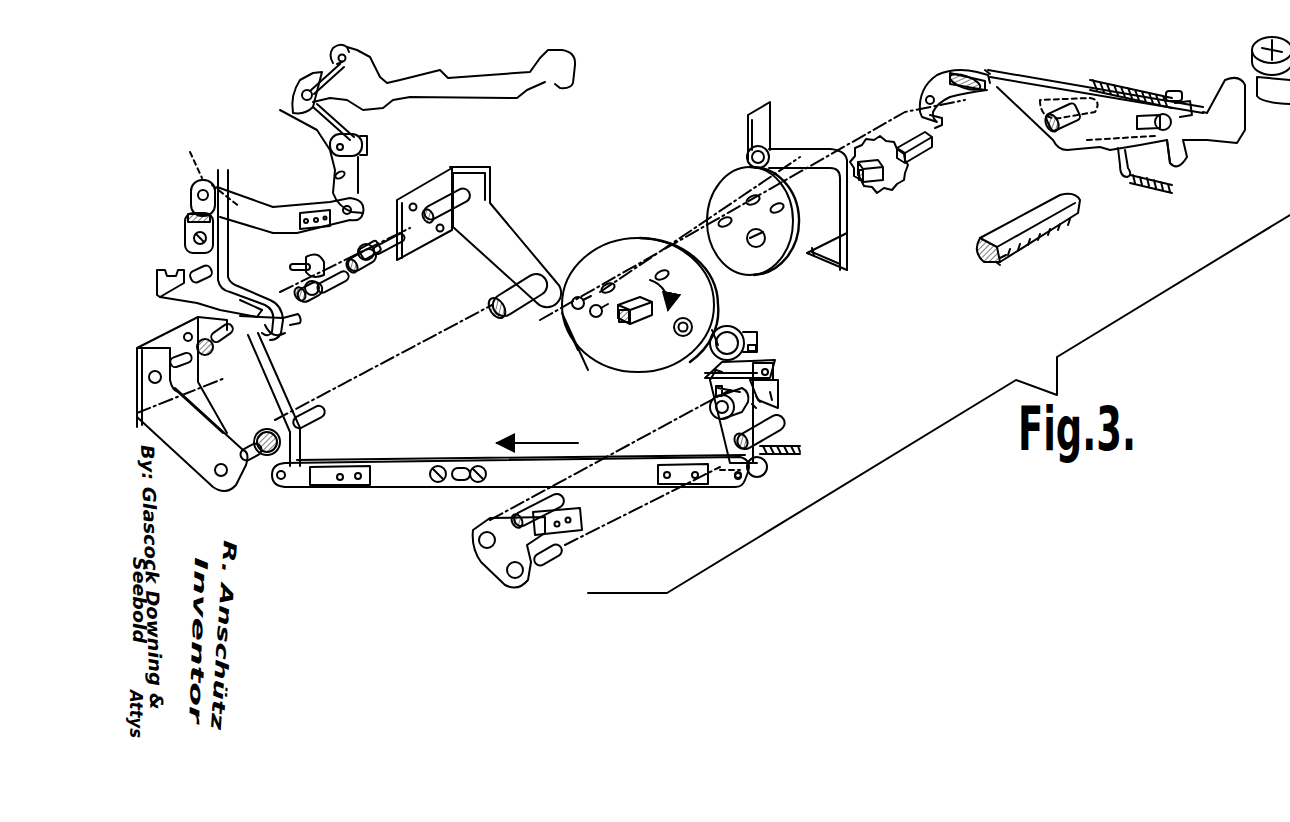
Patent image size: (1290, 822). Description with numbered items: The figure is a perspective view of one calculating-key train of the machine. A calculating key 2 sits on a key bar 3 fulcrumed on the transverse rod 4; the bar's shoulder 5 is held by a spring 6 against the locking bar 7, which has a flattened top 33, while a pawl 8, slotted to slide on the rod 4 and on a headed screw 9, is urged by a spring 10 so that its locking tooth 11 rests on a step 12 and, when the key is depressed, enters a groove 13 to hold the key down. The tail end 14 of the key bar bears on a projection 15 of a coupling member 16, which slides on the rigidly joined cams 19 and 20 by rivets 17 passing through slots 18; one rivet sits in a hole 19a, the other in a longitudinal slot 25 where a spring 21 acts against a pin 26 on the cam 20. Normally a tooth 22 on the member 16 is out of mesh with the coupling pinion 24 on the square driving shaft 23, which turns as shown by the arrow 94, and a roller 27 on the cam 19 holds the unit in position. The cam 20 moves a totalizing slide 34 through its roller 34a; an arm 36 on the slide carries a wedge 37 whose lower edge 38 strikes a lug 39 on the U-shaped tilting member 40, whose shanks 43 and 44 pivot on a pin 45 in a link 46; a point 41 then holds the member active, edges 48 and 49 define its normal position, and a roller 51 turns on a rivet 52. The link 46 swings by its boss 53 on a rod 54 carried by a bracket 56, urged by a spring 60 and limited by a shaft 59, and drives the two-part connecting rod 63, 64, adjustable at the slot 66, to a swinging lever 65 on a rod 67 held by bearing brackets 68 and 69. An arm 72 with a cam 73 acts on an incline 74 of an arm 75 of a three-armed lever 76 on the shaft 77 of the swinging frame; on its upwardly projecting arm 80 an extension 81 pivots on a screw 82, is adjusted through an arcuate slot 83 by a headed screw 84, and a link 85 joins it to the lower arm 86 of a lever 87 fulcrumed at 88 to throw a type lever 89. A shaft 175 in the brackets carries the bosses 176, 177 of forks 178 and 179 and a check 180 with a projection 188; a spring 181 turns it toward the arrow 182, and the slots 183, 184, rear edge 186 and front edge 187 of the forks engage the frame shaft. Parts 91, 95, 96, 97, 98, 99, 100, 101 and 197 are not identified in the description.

The calculating key 2 is at (1270, 40).
The key bar 3 is at (1220, 122).
The transverse rod 4 is at (1068, 112).
The shoulder 5 is at (1138, 150).
The spring 6 is at (1165, 192).
The locking bar 7 is at (978, 247).
The pawl 8 is at (1188, 108).
The headed screw 9 is at (1175, 91).
The spring 10 is at (1125, 88).
The locking tooth 11 is at (1180, 160).
The step 12 is at (1003, 257).
The groove 13 is at (993, 264).
The tail end 14 is at (995, 72).
The projection 15 is at (987, 72).
The coupling member 16 is at (945, 73).
The rivets 17 is at (597, 305).
The slots 18 is at (663, 270).
The cam 19 is at (617, 255).
The hole 19a is at (926, 100).
The cam 20 is at (745, 177).
The spring 21 is at (967, 78).
The tooth 22 is at (943, 119).
The driving shaft 23 is at (632, 325).
The coupling pinion 24 is at (898, 178).
The longitudinal slot 25 is at (952, 80).
The pin 26 is at (748, 198).
The roller 27 is at (678, 333).
The flattened top 33 is at (1045, 207).
The totalizing slide 34 is at (753, 120).
The roller 34a is at (750, 149).
The arm 36 is at (811, 151).
The wedge 37 is at (842, 248).
The lower edge 38 is at (828, 267).
The lug 39 is at (758, 341).
The tilting member 40 is at (775, 381).
The point 41 is at (812, 252).
The shank 43 is at (768, 368).
The shank 44 is at (716, 368).
The pin 45 is at (768, 378).
The link 46 is at (730, 427).
The edge 48 is at (790, 394).
The edge 49 is at (718, 389).
The roller 51 is at (740, 330).
The rivet 52 is at (757, 348).
The boss 53 is at (716, 403).
The rod 54 is at (535, 503).
The bracket 56 is at (510, 555).
The shaft 59 is at (552, 556).
The spring 60 is at (802, 451).
The connecting rod part 63 is at (625, 478).
The connecting rod part 64 is at (395, 487).
The swinging lever 65 is at (312, 413).
The slot 66 is at (461, 468).
The rod 67 is at (252, 460).
The bearing bracket 68 is at (190, 465).
The bearing bracket 69 is at (510, 245).
The arm 72 is at (272, 352).
The cam 73 is at (290, 320).
The incline 74 is at (280, 333).
The arm 75 is at (250, 305).
The three-armed lever 76 is at (218, 306).
The shaft 77 is at (195, 276).
The upwardly projecting arm 80 is at (192, 272).
The extension 81 is at (208, 170).
The screw 82 is at (193, 237).
The arcuate slot 83 is at (196, 230).
The headed screw 84 is at (192, 192).
The link 85 is at (290, 212).
The lower arm 86 is at (336, 189).
The lever 87 is at (312, 122).
The fulcrum 88 is at (336, 173).
The type lever 89 is at (455, 75).
The screw 91 is at (262, 437).
The arrow 94 is at (664, 293).
The pin 95 is at (770, 390).
The pin 96 is at (761, 406).
The rim 97 is at (708, 292).
The roller 98 is at (540, 300).
The flat 99 is at (580, 350).
The direction arrow 100 is at (537, 434).
The pivot 101 is at (978, 73).
The shaft 175 is at (452, 232).
The boss 176 is at (208, 352).
The boss 177 is at (356, 255).
The fork 178 is at (210, 345).
The fork 179 is at (366, 246).
The check 180 is at (340, 280).
The spring 181 is at (290, 267).
The arrow 182 is at (316, 292).
The slot 183 is at (190, 325).
The slot 184 is at (362, 270).
The rear edge 186 is at (198, 320).
The front edge 187 is at (388, 252).
The projection 188 is at (312, 263).
The pin 197 is at (368, 147).